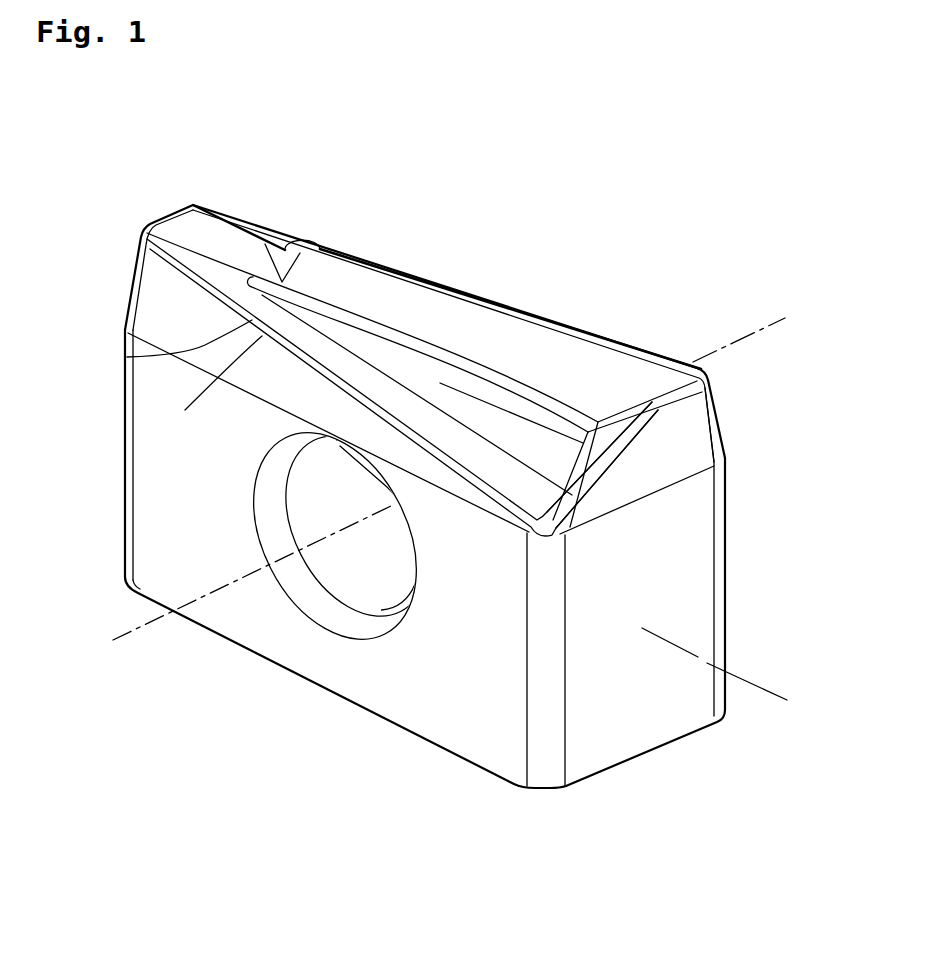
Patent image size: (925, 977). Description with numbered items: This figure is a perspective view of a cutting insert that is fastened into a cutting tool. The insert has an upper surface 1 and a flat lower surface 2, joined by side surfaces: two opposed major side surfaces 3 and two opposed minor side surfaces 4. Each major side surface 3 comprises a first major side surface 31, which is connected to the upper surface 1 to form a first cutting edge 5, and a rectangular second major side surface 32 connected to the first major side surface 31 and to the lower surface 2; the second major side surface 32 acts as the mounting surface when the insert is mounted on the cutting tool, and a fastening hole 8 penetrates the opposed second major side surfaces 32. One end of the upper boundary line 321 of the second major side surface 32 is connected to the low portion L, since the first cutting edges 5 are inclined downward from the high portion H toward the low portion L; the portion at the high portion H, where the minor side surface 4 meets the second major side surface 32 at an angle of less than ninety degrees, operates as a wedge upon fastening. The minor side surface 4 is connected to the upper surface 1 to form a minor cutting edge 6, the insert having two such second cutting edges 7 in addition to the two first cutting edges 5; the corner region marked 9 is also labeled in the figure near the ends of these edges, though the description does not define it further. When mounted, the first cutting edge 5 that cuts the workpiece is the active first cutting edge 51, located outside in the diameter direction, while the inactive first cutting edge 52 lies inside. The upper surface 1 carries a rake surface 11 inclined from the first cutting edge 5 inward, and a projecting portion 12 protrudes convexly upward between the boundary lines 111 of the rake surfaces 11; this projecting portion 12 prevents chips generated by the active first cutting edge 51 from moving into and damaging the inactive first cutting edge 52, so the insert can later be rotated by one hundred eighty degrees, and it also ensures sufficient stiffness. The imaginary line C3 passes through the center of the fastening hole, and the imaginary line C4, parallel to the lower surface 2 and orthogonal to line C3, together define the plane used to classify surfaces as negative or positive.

The upper surface 1 is at (455, 318).
The lower surface 2 is at (371, 748).
The major side surface 3 is at (172, 549).
The first major side surface 31 is at (157, 287).
The second major side surface 32 is at (461, 702).
The upper boundary line 321 is at (185, 410).
The minor side surface 4 is at (637, 727).
The first cutting edge 5 is at (382, 370).
The active first cutting edge 51 is at (127, 357).
The inactive first cutting edge 52 is at (510, 309).
The minor cutting edge 6 is at (166, 212).
The second cutting edge 7 is at (623, 455).
The fastening hole 8 is at (343, 572).
The corner edge 9 is at (193, 204).
The rake surface 11 is at (343, 372).
The boundary line 111 is at (487, 443).
The projecting portion 12 is at (400, 353).
The high portion H is at (139, 227).
The low portion L is at (540, 537).
The imaginary line C3 is at (756, 332).
The imaginary line C4 is at (731, 674).